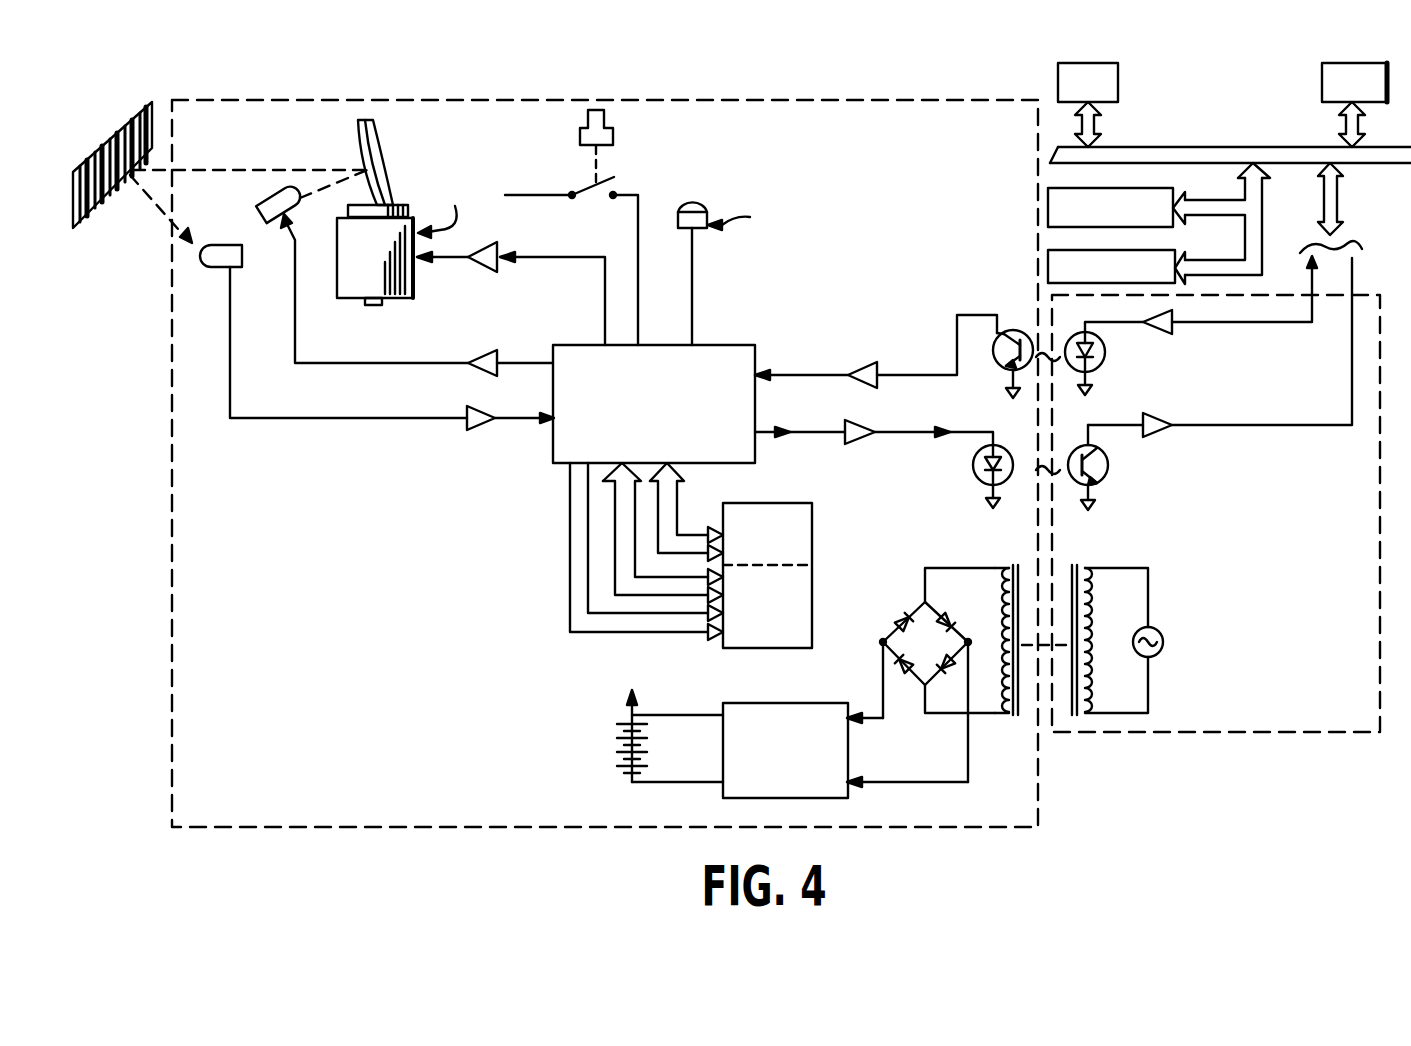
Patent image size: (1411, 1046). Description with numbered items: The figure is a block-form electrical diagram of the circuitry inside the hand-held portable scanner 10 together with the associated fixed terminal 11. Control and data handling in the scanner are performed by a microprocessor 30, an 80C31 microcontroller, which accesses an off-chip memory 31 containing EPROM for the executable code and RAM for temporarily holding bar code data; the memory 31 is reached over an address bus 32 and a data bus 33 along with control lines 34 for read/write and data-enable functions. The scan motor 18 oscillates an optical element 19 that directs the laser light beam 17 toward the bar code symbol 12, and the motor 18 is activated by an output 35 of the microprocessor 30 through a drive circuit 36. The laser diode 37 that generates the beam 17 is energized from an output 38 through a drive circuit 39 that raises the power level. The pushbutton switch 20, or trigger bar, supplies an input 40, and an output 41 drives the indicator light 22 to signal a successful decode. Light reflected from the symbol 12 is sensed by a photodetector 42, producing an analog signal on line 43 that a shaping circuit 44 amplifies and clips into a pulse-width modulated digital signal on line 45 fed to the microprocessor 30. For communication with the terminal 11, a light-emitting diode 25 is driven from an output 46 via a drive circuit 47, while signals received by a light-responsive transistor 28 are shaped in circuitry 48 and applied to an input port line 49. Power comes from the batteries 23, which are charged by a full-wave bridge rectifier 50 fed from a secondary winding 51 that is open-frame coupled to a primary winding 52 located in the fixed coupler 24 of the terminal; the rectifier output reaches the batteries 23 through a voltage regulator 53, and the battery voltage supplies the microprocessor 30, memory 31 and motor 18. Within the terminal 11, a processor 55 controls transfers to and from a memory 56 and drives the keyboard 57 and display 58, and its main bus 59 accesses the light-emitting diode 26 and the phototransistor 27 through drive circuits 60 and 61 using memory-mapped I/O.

The portable scanner 10 is at (307, 95).
The terminal 11 is at (1040, 78).
The bar code symbol 12 is at (108, 138).
The light beam 17 is at (290, 169).
The motor 18 is at (418, 292).
The optical element 19 is at (392, 147).
The pushbutton switch 20 is at (582, 132).
The indicator light 22 is at (705, 204).
The batteries 23 is at (621, 748).
The coupler 24 is at (1240, 745).
The light-emitting diode 25 is at (973, 465).
The light-emitting diode 26 is at (1106, 363).
The light-responsive transistor 27 is at (1107, 472).
The light-responsive transistor 28 is at (1017, 330).
The microprocessor 30 is at (555, 476).
The off-chip memory 31 is at (813, 558).
The address bus 32 is at (680, 521).
The data bus 33 is at (612, 547).
The control lines 34 is at (571, 596).
The output 35 is at (600, 254).
The drive circuit 36 is at (497, 246).
The laser diode 37 is at (262, 209).
The output 38 is at (540, 325).
The drive circuit 39 is at (470, 371).
The input 40 is at (640, 222).
The output 41 is at (693, 297).
The photodetector 42 is at (216, 268).
The line 43 is at (312, 420).
The shaping circuit 44 is at (483, 435).
The line 45 is at (531, 424).
The output 46 is at (822, 431).
The drive circuit 47 is at (868, 422).
The circuitry 48 is at (875, 360).
The input port line 49 is at (822, 375).
The full-wave bridge rectifier 50 is at (882, 625).
The secondary winding 51 is at (993, 609).
The primary winding 52 is at (1105, 616).
The voltage regulator 53 is at (808, 703).
The processor 55 is at (1119, 85).
The memory 56 is at (1322, 86).
The keyboard 57 is at (1047, 268).
The display 58 is at (1047, 207).
The main bus 59 is at (1060, 142).
The drive circuit 60 is at (1176, 330).
The drive circuit 61 is at (1176, 415).